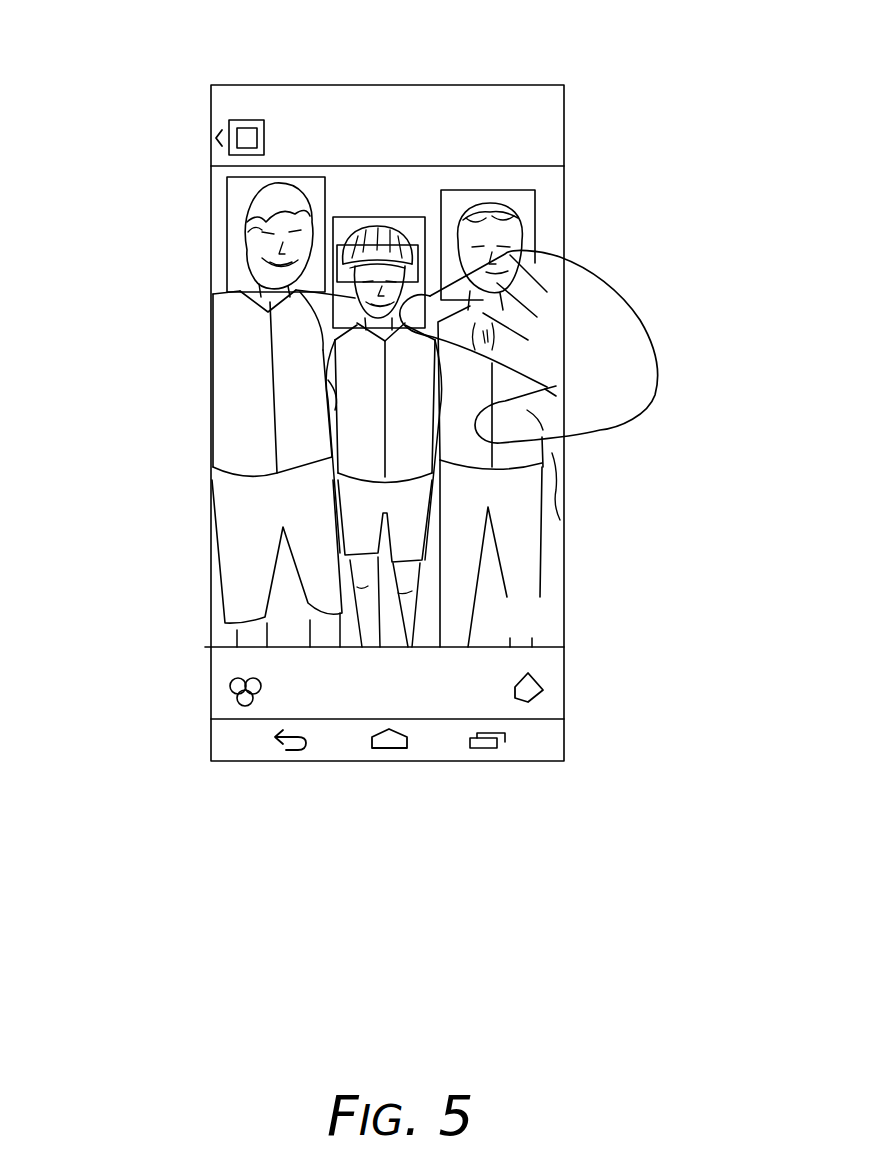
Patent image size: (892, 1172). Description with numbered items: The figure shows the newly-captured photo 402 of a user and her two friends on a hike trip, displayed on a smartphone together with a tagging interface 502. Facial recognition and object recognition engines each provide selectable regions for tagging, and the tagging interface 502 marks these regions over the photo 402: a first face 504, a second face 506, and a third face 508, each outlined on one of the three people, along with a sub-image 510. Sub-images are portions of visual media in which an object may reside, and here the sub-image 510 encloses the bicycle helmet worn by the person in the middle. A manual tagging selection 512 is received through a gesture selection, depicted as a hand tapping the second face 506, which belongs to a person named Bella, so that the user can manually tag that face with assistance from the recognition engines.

The photo 402 is at (537, 631).
The tagging interface 502 is at (140, 174).
The first face 504 is at (229, 292).
The second face 506 is at (337, 330).
The third face 508 is at (419, 300).
The sub-image 510 is at (422, 216).
The manual tagging selection 512 is at (512, 246).